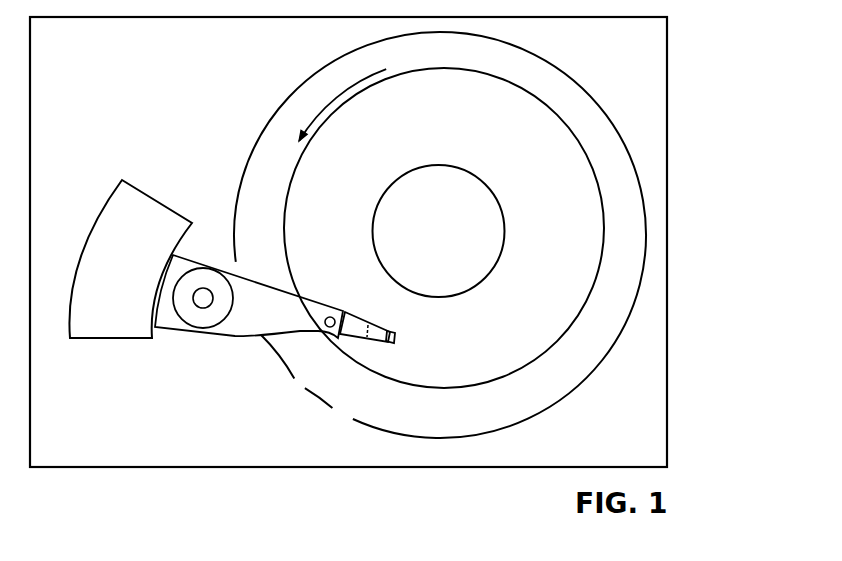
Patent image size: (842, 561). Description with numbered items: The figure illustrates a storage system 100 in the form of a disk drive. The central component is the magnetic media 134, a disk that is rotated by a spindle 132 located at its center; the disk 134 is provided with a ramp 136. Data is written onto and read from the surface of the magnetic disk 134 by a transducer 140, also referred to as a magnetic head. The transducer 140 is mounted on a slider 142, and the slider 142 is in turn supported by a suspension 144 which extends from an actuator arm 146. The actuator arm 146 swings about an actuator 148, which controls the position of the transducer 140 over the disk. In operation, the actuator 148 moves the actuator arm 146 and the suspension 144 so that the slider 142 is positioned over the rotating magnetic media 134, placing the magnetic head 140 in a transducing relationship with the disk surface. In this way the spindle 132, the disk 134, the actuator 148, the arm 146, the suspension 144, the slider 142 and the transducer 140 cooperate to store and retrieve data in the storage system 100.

The storage system 100 is at (686, 52).
The spindle 132 is at (481, 180).
The magnetic media 134 is at (588, 254).
The ramp 136 is at (474, 387).
The transducer 140 is at (392, 336).
The slider 142 is at (394, 332).
The suspension 144 is at (350, 340).
The actuator arm 146 is at (262, 284).
The actuator 148 is at (197, 303).